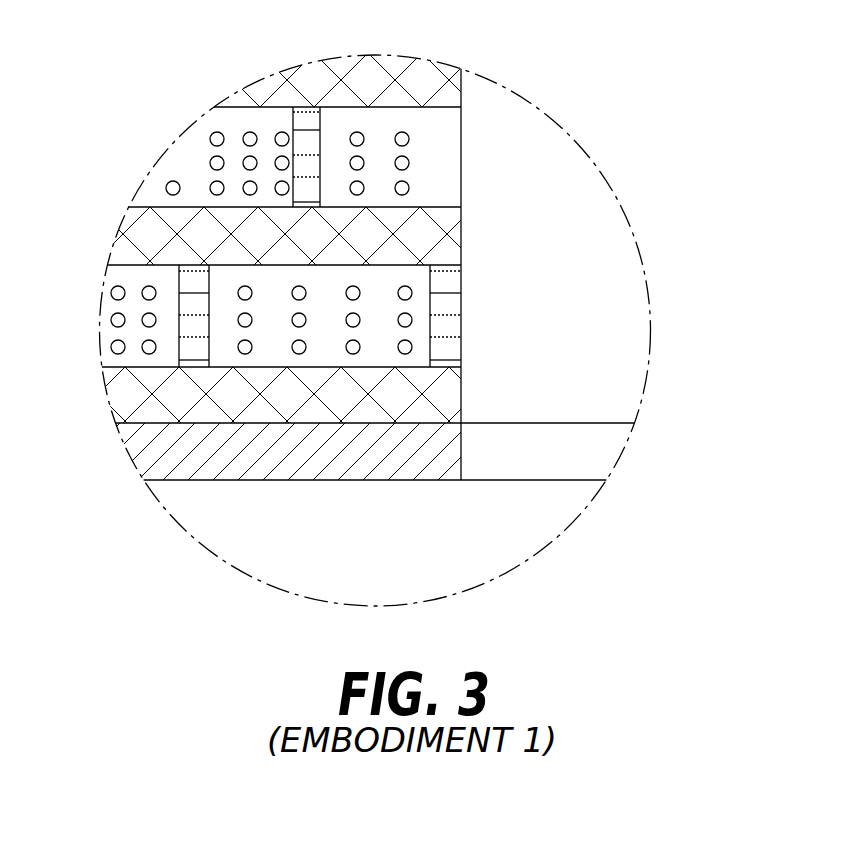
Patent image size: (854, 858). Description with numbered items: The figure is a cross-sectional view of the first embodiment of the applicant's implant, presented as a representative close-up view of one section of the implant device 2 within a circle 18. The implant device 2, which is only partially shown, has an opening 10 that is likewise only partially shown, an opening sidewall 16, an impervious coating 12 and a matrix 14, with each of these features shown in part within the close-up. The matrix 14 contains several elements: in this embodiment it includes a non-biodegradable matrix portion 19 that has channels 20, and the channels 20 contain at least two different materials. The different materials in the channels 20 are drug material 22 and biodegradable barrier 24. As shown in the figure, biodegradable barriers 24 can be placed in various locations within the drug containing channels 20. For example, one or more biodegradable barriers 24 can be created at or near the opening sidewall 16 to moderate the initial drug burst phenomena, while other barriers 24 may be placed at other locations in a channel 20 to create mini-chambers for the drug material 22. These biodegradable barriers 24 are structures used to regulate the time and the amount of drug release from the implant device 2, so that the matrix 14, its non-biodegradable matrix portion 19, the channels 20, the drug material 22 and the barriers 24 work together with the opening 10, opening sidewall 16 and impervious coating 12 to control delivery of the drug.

The implant device 2 is at (418, 482).
The opening 10 is at (547, 458).
The impervious coating 12 is at (158, 448).
The matrix 14 is at (401, 303).
The opening sidewall 16 is at (463, 125).
The circle 18 is at (567, 127).
The non-biodegradable matrix portion 19 is at (128, 405).
The channels 20 is at (180, 172).
The drug material 22 is at (143, 298).
The biodegradable barrier 24 is at (307, 148).